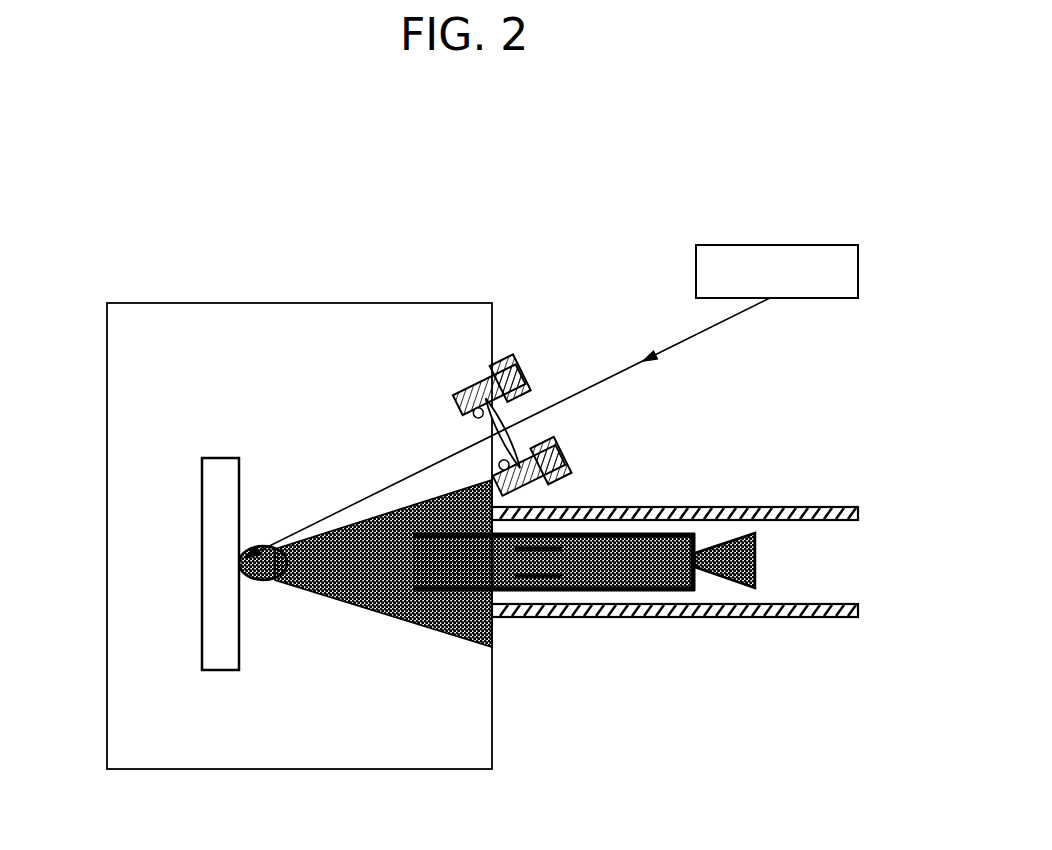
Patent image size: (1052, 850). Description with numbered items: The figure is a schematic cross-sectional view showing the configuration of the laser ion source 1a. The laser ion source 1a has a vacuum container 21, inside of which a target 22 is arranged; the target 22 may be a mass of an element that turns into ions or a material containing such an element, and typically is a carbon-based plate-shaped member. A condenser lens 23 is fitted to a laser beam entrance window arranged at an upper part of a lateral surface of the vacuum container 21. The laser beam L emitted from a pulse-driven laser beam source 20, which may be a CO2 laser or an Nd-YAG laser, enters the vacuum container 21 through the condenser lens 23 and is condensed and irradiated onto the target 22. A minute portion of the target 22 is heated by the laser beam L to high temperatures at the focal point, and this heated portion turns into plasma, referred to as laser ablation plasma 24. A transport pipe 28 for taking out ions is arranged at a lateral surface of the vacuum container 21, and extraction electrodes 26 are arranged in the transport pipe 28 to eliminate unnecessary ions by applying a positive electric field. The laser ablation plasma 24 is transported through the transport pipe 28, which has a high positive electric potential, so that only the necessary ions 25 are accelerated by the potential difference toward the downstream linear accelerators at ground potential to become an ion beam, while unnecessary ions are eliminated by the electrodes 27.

The laser ion source 1a is at (487, 282).
The laser beam L is at (427, 468).
The laser beam source 20 is at (813, 245).
The vacuum container 21 is at (258, 303).
The target 22 is at (200, 567).
The condenser lens 23 is at (533, 392).
The laser ablation plasma 24 is at (271, 580).
The necessary ions 25 is at (440, 565).
The extraction electrodes 26 is at (480, 593).
The electrodes 27 is at (540, 593).
The transport pipe 28 is at (573, 507).